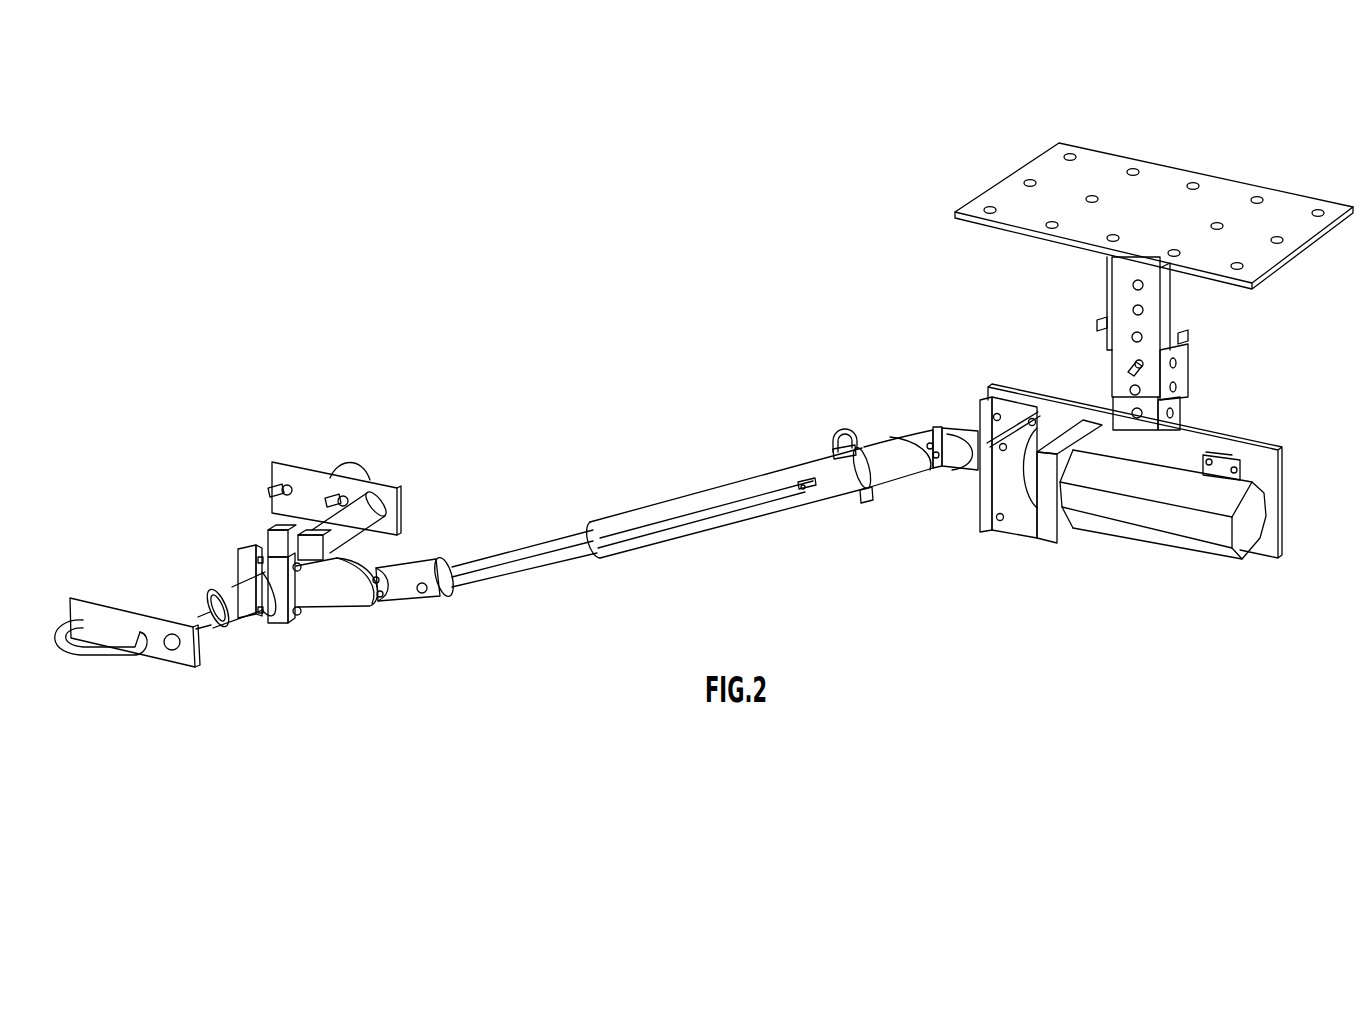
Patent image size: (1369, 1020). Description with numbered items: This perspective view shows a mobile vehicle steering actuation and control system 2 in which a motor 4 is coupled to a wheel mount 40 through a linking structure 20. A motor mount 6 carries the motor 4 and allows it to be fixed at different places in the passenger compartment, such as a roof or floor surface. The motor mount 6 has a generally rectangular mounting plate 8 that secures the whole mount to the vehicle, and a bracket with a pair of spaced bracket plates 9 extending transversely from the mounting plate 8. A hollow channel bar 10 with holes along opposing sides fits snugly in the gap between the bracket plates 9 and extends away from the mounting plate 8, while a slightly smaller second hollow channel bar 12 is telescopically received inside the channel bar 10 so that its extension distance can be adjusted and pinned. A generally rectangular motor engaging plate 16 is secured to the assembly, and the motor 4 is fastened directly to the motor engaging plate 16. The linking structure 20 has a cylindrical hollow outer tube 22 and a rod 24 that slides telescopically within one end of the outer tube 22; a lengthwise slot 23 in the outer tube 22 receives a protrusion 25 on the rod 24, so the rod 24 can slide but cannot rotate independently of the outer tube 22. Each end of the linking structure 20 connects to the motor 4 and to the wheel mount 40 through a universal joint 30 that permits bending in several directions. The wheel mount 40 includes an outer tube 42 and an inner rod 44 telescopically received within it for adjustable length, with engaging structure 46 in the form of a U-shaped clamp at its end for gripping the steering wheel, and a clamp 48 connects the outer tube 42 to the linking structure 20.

The mobile vehicle steering actuation and control system 2 is at (656, 314).
The motor 4 is at (1142, 518).
The motor mount 6 is at (1305, 304).
The mounting plate 8 is at (1160, 182).
The bracket plates 9 is at (1192, 305).
The hollow channel bar 10 is at (1118, 357).
The second hollow channel bar 12 is at (1180, 415).
The motor engaging plate 16 is at (1263, 460).
The linking structure 20 is at (610, 458).
The outer tube 22 is at (727, 490).
The slot 23 is at (708, 510).
The rod 24 is at (502, 550).
The protrusion 25 is at (798, 493).
The universal joint 30 is at (900, 468).
The wheel mount 40 is at (366, 412).
The outer tube 42 is at (232, 590).
The inner rod 44 is at (205, 627).
The engaging structure 46 is at (107, 653).
The clamp 48 is at (307, 607).